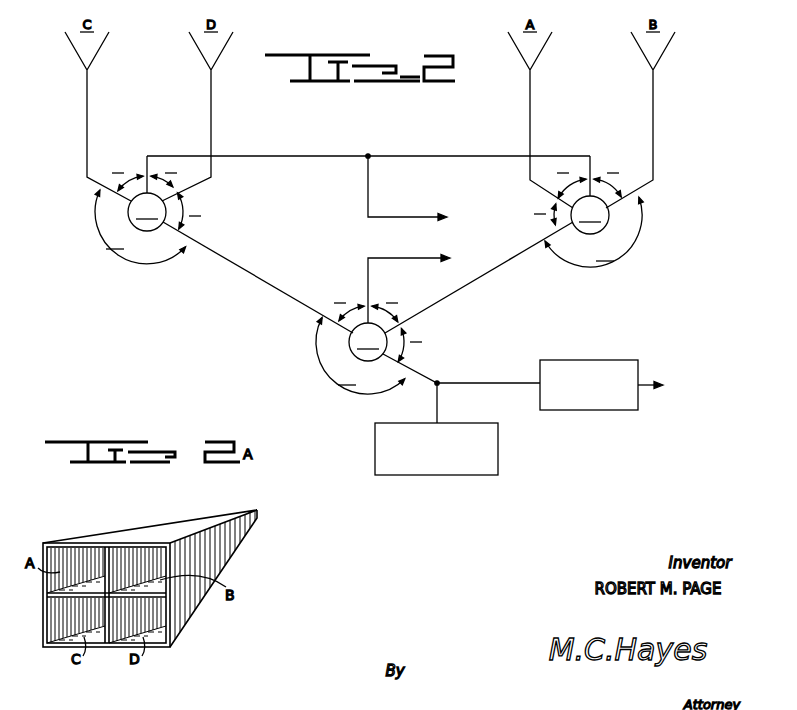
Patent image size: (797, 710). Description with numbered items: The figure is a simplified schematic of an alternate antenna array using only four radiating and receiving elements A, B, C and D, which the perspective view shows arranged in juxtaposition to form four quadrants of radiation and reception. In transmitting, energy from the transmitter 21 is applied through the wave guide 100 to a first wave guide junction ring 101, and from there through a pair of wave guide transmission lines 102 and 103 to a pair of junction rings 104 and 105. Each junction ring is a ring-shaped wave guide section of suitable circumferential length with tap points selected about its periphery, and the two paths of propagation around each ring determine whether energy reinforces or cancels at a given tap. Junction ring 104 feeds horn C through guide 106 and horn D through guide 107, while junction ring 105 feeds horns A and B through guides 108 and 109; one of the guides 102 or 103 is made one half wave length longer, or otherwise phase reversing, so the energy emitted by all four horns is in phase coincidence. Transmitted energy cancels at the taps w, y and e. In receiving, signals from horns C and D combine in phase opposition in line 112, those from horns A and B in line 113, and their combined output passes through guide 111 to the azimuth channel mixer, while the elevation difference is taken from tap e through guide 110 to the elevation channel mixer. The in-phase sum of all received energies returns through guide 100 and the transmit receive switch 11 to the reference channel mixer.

The wave guide 100 is at (427, 379).
The first wave guide junction ring 101 is at (369, 345).
The wave guide transmission line 102 is at (252, 274).
The wave guide transmission line 103 is at (505, 262).
The wave guide junction ring 104 is at (148, 212).
The wave guide junction ring 105 is at (588, 218).
The guide 106 is at (86, 122).
The guide 107 is at (212, 122).
The guide 108 is at (529, 122).
The guide 109 is at (654, 122).
The guide 110 is at (388, 258).
The guide 111 is at (410, 218).
The line 112 is at (306, 155).
The line 113 is at (450, 155).
The transmit receive switch 11 is at (560, 359).
The transmitter 21 is at (400, 422).